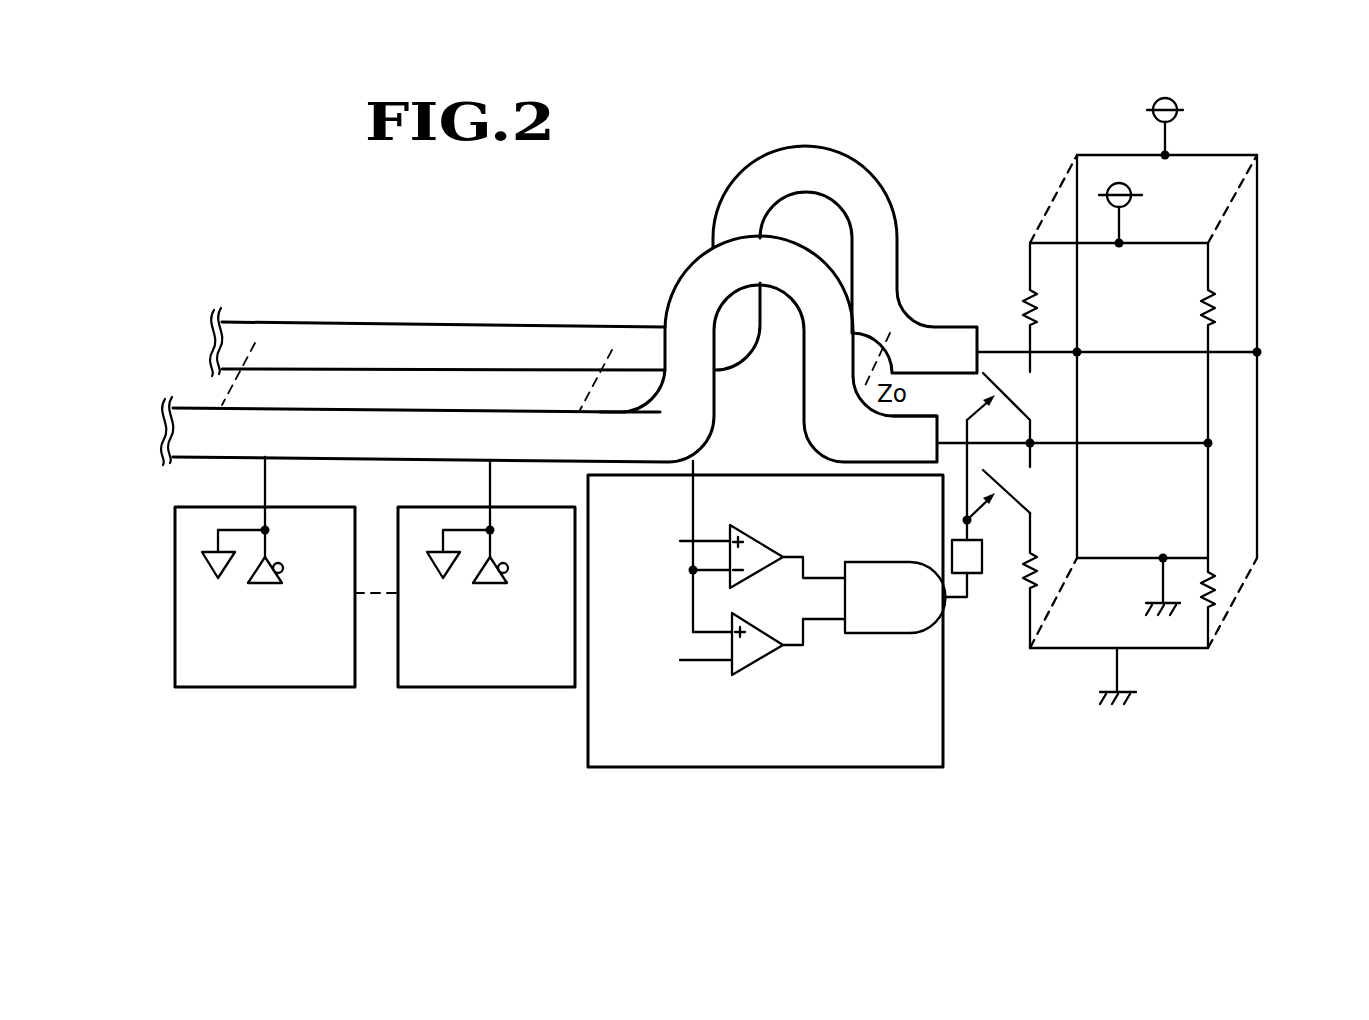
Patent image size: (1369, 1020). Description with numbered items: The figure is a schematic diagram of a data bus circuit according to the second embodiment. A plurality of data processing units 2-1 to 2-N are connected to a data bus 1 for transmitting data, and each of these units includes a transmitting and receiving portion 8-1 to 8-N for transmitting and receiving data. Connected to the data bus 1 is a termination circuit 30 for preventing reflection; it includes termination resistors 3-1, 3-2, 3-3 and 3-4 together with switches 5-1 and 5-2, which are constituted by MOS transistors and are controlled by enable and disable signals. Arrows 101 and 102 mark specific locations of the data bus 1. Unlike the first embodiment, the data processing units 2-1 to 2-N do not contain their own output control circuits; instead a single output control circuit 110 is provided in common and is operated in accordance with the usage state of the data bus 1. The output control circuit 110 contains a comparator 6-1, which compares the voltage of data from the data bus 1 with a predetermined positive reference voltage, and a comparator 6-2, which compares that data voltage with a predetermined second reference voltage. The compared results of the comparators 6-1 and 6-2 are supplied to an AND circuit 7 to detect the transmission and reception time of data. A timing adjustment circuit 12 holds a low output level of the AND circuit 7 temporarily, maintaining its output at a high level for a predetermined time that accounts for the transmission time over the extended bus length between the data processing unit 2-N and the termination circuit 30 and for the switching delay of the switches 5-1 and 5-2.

The data bus 1 is at (427, 322).
The arrow 101 is at (628, 410).
The arrow 102 is at (897, 416).
The data processing unit 2-1 is at (225, 687).
The data processing unit 2-N is at (453, 687).
The transmitting and receiving portion 8-1 is at (284, 574).
The transmitting and receiving portion 8-N is at (508, 574).
The termination circuit 30 is at (1258, 178).
The termination resistor 3-1 is at (1030, 290).
The termination resistor 3-2 is at (1023, 590).
The termination resistor 3-3 is at (1222, 308).
The termination resistor 3-4 is at (1212, 568).
The switch 5-1 is at (1017, 401).
The switch 5-2 is at (1022, 506).
The timing adjustment circuit 12 is at (972, 575).
The AND circuit 7 is at (920, 562).
The comparator 6-1 is at (745, 527).
The comparator 6-2 is at (745, 675).
The output control circuit 110 is at (736, 767).